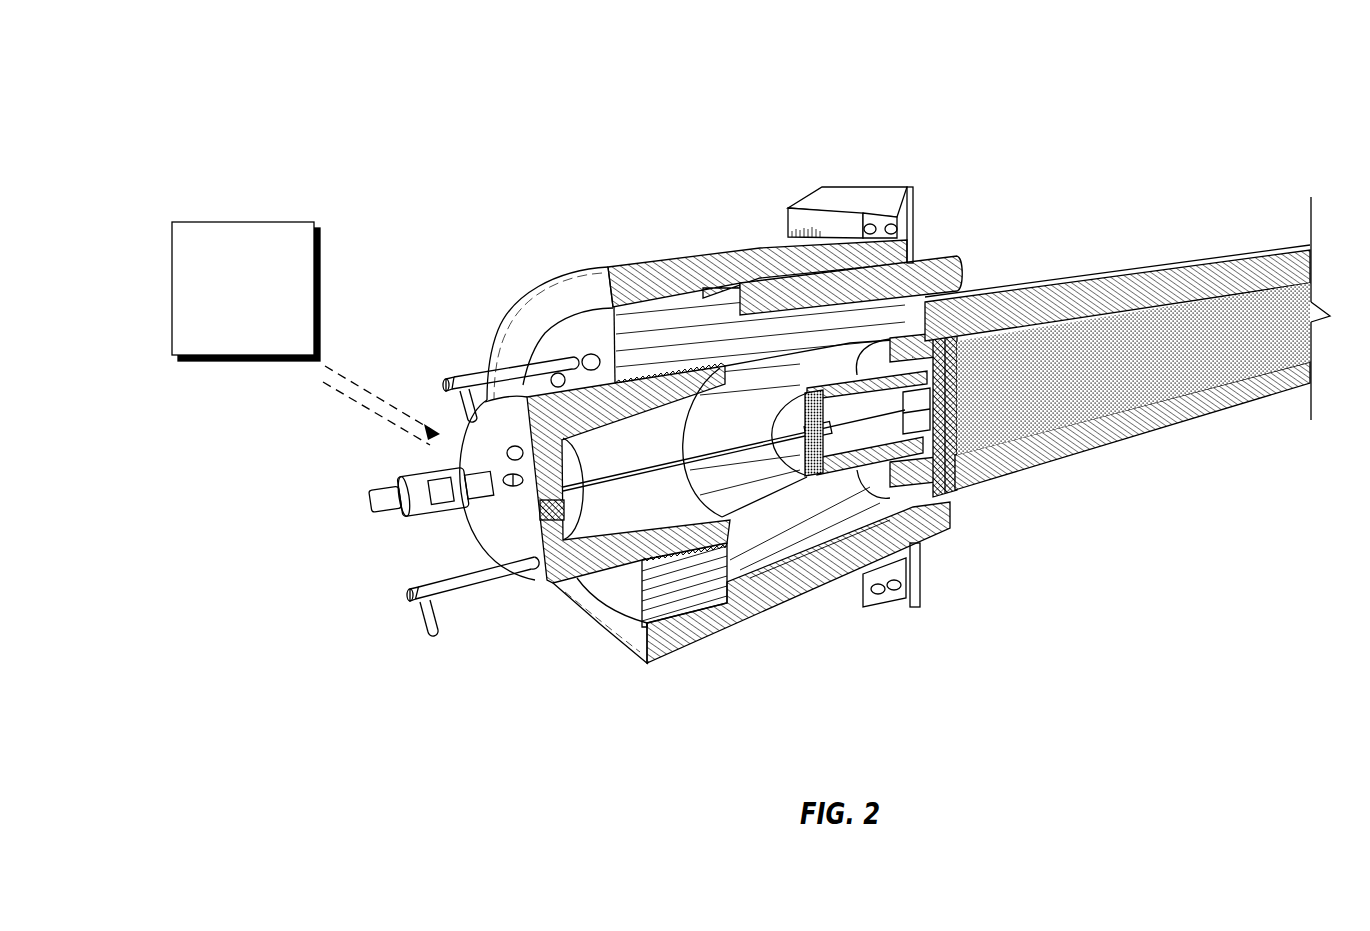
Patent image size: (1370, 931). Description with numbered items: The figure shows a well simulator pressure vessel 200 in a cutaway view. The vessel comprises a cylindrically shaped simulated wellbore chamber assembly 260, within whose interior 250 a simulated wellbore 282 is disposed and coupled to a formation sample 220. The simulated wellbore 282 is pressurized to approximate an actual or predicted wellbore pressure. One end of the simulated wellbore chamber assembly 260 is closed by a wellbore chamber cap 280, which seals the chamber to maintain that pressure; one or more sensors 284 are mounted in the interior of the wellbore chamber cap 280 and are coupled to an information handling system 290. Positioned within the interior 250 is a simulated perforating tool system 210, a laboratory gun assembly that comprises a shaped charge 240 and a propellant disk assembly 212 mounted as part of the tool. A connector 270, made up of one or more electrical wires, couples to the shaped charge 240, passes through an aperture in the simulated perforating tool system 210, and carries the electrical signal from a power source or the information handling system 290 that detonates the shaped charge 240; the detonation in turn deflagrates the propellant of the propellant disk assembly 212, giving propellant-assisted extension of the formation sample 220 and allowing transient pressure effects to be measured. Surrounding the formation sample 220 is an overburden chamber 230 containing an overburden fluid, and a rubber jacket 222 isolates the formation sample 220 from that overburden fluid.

The well simulator pressure vessel 200 is at (301, 86).
The simulated perforating tool system 210 is at (813, 462).
The propellant disk assembly 212 is at (998, 445).
The formation sample 220 is at (1150, 374).
The rubber jacket 222 is at (1252, 290).
The overburden chamber 230 is at (1127, 288).
The shaped charge 240 is at (947, 352).
The interior 250 is at (664, 508).
The simulated wellbore chamber assembly 260 is at (670, 258).
The connector 270 is at (608, 478).
The wellbore chamber cap 280 is at (553, 582).
The simulated wellbore 282 is at (920, 525).
The sensors 284 is at (547, 512).
The information handling system 290 is at (289, 222).